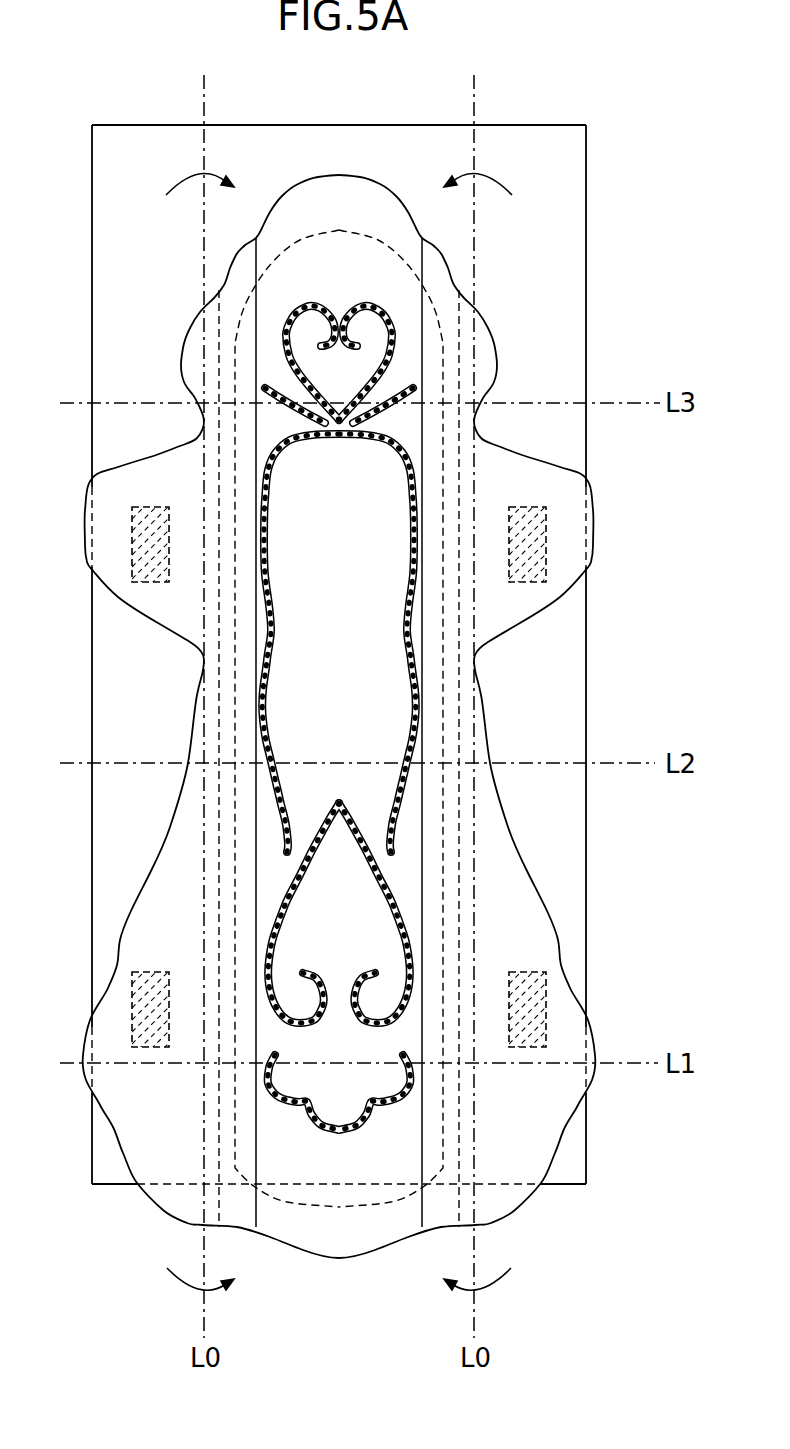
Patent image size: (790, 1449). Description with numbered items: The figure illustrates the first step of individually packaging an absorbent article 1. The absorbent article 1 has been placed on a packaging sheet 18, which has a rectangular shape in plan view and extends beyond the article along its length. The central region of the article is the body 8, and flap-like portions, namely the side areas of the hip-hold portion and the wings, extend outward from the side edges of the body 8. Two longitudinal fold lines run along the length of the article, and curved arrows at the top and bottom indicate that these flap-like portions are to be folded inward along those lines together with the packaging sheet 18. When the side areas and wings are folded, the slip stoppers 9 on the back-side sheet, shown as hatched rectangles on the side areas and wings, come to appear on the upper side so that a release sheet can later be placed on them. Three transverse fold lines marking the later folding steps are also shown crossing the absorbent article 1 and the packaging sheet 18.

The absorbent article 1 is at (492, 292).
The body 8 is at (338, 265).
The slip stoppers 9 is at (548, 540).
The packaging sheet 18 is at (513, 123).